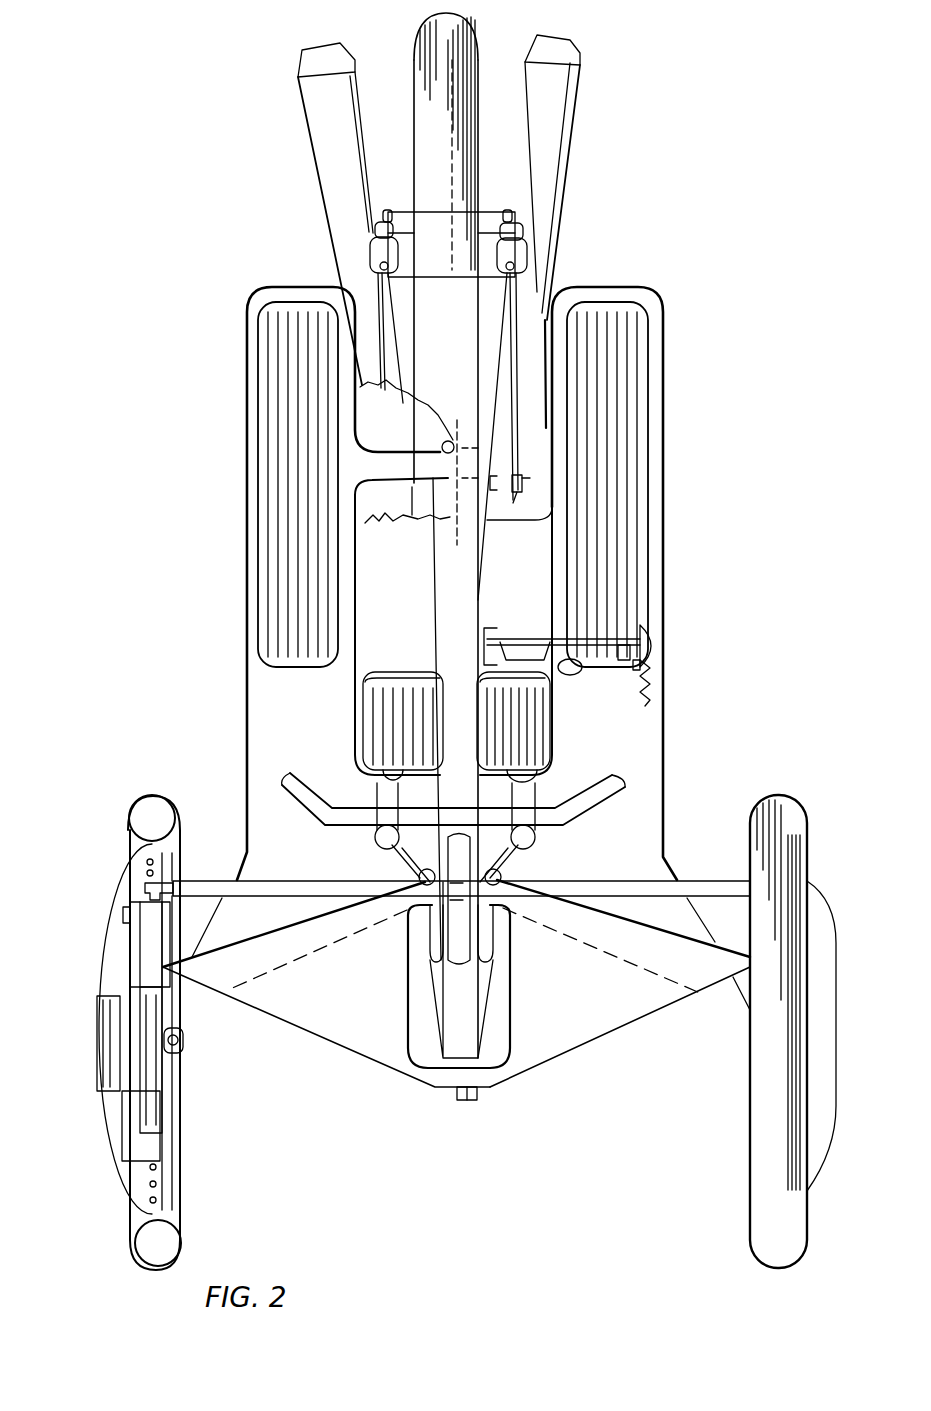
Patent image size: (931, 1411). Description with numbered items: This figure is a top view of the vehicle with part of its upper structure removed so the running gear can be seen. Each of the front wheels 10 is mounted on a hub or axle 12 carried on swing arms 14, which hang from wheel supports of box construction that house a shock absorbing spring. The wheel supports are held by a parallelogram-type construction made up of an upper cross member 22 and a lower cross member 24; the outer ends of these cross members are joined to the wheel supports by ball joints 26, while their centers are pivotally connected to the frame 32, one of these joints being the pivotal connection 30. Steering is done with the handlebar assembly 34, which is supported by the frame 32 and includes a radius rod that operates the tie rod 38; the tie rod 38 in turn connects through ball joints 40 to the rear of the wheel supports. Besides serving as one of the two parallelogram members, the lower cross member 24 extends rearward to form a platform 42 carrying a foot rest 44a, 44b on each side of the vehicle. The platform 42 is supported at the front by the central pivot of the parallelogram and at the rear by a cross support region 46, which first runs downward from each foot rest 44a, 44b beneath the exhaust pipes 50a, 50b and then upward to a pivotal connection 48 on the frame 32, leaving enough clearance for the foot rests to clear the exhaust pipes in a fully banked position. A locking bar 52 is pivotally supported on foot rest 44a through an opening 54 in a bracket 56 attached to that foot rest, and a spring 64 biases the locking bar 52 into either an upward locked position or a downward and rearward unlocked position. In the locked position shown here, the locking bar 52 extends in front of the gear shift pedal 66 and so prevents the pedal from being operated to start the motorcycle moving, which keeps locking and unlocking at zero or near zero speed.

The front wheels 10 is at (130, 1244).
The hub or axle 12 is at (186, 1040).
The swing arms 14 is at (168, 1068).
The upper cross member 22 is at (607, 1030).
The lower cross member 24 is at (733, 1003).
The ball joints 26 is at (160, 1003).
The pivotal connection 30 is at (457, 1098).
The frame 32 is at (487, 1040).
The handlebar assembly 34 is at (290, 775).
The tie rod 38 is at (203, 880).
The ball joints 40 is at (145, 887).
The platform 42 is at (663, 790).
The foot rest 44a is at (655, 503).
The foot rest 44b is at (253, 503).
The cross support region 46 is at (382, 446).
The pivotal connection 48 is at (444, 447).
The exhaust pipe 50a is at (540, 300).
The exhaust pipe 50b is at (360, 295).
The locking bar 52 is at (608, 637).
The opening 54 is at (655, 653).
The bracket 56 is at (654, 632).
The spring 64 is at (653, 685).
The gear shift pedal 66 is at (572, 674).